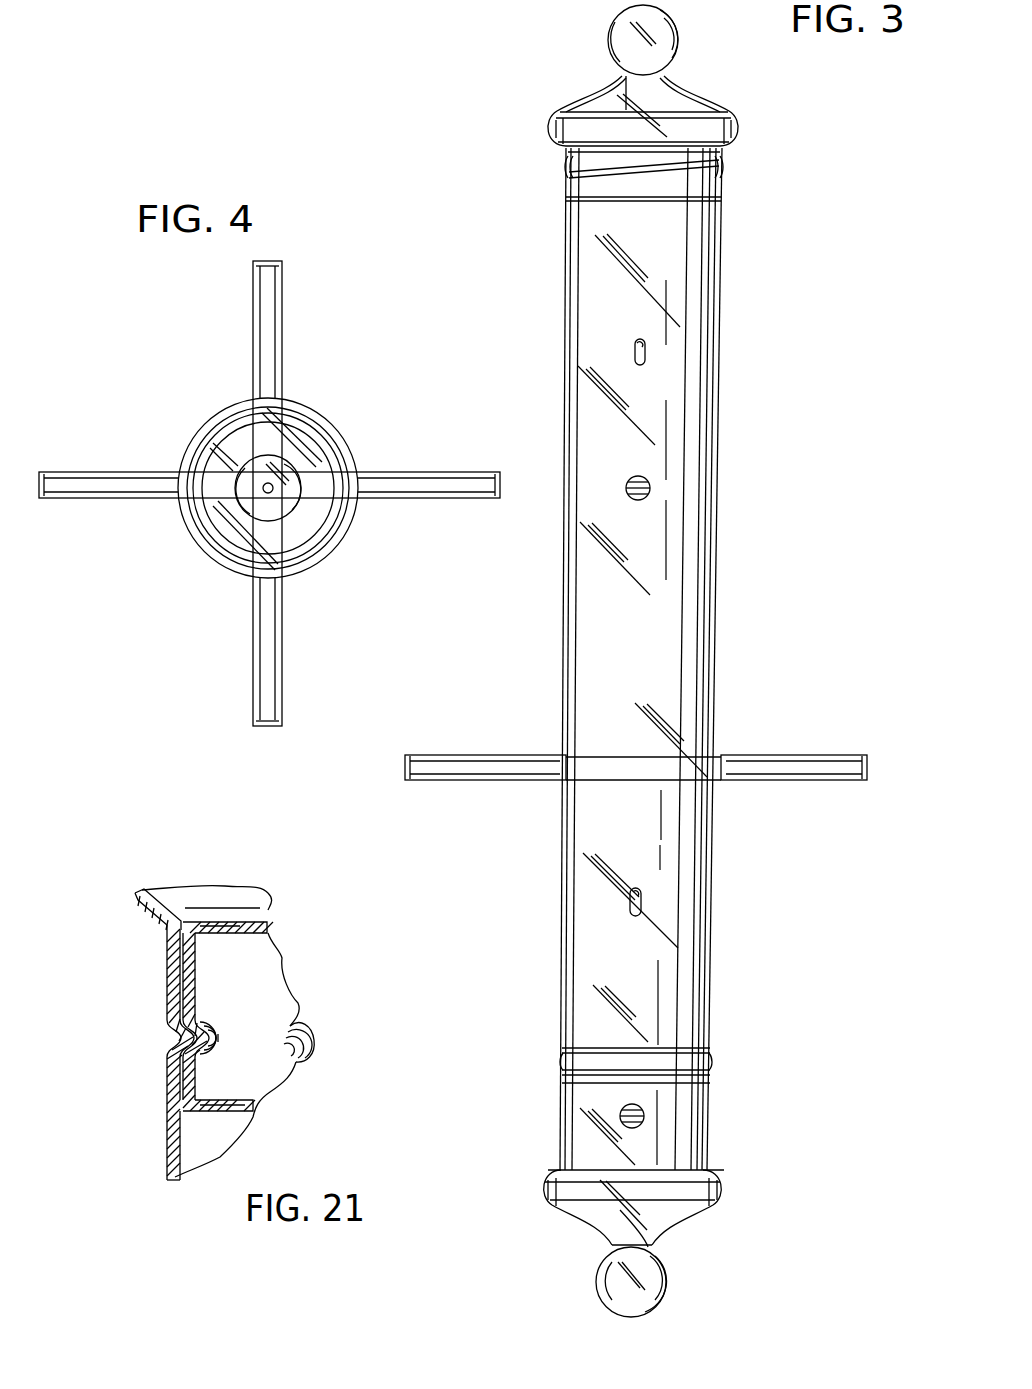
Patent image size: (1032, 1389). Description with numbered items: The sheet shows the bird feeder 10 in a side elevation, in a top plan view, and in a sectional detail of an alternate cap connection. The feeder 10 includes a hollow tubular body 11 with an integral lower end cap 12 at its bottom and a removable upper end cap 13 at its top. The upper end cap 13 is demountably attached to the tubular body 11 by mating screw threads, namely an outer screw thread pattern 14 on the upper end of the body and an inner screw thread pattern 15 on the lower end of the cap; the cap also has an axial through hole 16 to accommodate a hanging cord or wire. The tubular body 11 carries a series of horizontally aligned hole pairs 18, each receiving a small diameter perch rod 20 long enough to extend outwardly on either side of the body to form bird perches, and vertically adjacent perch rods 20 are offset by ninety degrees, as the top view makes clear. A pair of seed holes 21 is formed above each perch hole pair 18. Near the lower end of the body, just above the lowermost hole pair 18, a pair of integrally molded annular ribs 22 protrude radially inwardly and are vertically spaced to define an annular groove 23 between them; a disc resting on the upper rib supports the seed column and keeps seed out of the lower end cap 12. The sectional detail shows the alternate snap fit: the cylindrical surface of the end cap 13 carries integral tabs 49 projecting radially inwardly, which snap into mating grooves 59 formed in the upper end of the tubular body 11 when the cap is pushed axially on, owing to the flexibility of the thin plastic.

In FIG. 3, the feeder 10 is at (738, 343).
In FIG. 4, the feeder 10 is at (368, 432).
In FIG. 3, the tubular body 11 is at (692, 556).
In FIG. 21, the tubular body 11 is at (167, 1147).
In FIG. 3, the lower end cap 12 is at (665, 1232).
In FIG. 3, the upper end cap 13 is at (567, 134).
In FIG. 4, the upper end cap 13 is at (318, 422).
In FIG. 21, the upper end cap 13 is at (147, 915).
In FIG. 3, the outer screw thread pattern 14 is at (721, 199).
In FIG. 3, the inner screw thread pattern 15 is at (716, 158).
In FIG. 4, the axial through hole 16 is at (266, 493).
In FIG. 3, the hole pairs 18 is at (628, 498).
In FIG. 3, the perch rod 20 is at (649, 484).
In FIG. 4, the perch rod 20 is at (258, 366).
In FIG. 3, the seed holes 21 is at (634, 356).
In FIG. 3, the annular ribs 22 is at (710, 1080).
In FIG. 3, the annular groove 23 is at (560, 1060).
In FIG. 21, the tabs 49 is at (176, 1040).
In FIG. 21, the grooves 59 is at (204, 1023).